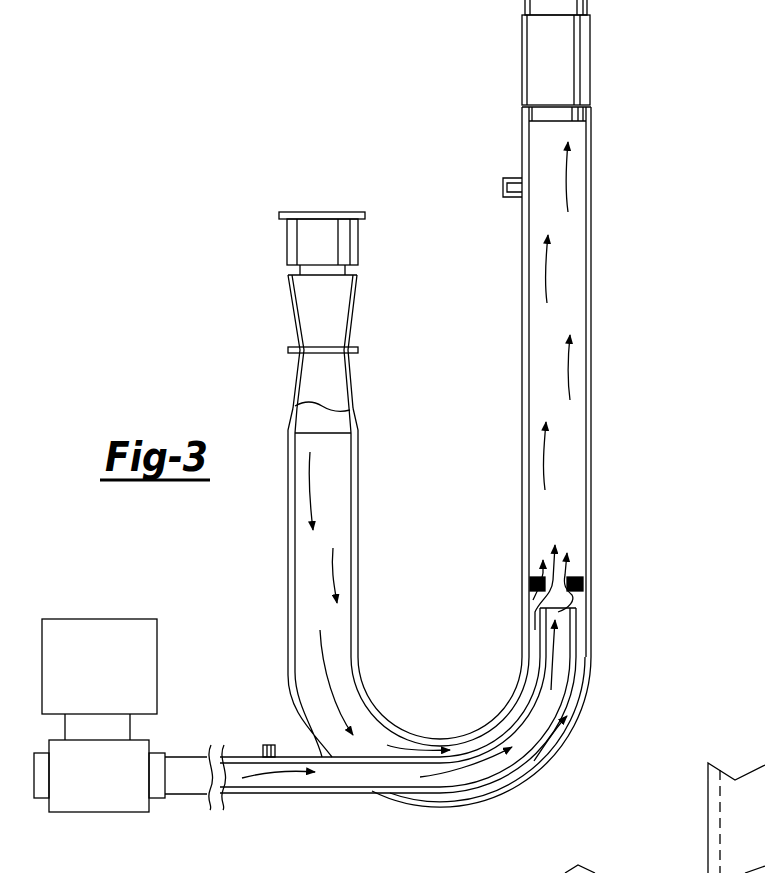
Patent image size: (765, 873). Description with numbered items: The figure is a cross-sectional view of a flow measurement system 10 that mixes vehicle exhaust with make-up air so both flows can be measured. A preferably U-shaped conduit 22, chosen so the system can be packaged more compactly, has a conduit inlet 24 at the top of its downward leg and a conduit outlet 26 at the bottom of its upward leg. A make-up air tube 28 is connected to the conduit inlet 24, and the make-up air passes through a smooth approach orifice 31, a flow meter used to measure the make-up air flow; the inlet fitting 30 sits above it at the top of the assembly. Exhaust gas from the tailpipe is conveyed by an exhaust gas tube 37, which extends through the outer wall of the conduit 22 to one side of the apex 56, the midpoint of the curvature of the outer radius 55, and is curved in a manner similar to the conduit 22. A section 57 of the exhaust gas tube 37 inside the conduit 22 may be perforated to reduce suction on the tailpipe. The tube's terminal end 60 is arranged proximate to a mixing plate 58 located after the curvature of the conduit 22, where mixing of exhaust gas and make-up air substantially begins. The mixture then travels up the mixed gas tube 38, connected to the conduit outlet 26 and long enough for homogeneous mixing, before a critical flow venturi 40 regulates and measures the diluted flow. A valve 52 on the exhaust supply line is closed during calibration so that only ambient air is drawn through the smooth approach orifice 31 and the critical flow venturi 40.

The flow measurement system 10 is at (657, 190).
The conduit 22 is at (545, 765).
The conduit inlet 24 is at (358, 470).
The conduit outlet 26 is at (576, 577).
The make-up air tube 28 is at (358, 240).
The inlet flange 30 is at (305, 212).
The smooth approach orifice 31 is at (358, 350).
The exhaust gas tube 37 is at (300, 793).
The mixed gas tube 38 is at (591, 273).
The critical flow venturi 40 is at (591, 76).
The valve 52 is at (157, 648).
The outer radius 55 is at (302, 733).
The apex 56 is at (450, 807).
The perforated section 57 is at (377, 757).
The mixing plate 58 is at (586, 582).
The terminal end 60 is at (560, 607).